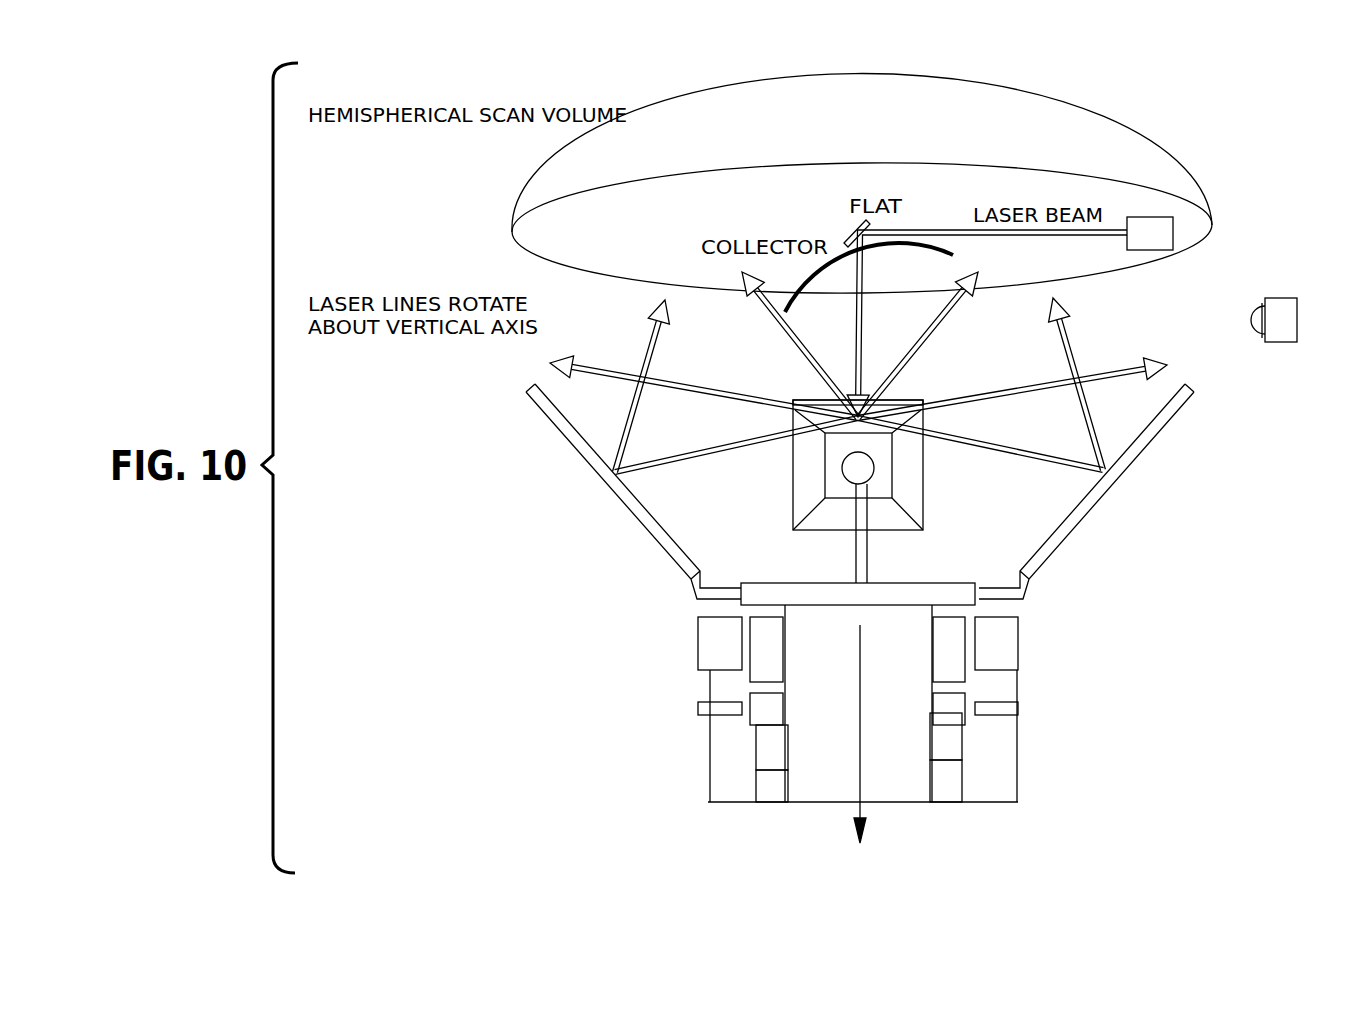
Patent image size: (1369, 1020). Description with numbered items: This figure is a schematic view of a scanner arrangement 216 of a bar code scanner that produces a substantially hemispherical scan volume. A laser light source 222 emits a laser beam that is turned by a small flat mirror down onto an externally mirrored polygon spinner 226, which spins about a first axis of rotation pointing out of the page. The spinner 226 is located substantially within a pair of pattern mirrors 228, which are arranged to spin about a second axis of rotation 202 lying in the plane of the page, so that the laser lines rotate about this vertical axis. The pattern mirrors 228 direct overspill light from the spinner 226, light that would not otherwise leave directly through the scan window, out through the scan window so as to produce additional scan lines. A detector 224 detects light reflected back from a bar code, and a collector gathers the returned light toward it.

The laser light source 222 is at (1184, 228).
The detector 224 is at (1282, 298).
The spinner 226 is at (790, 470).
The pattern mirrors 228 is at (690, 539).
The scanner assembly 216 is at (1190, 683).
The second axis of rotation 202 is at (858, 748).